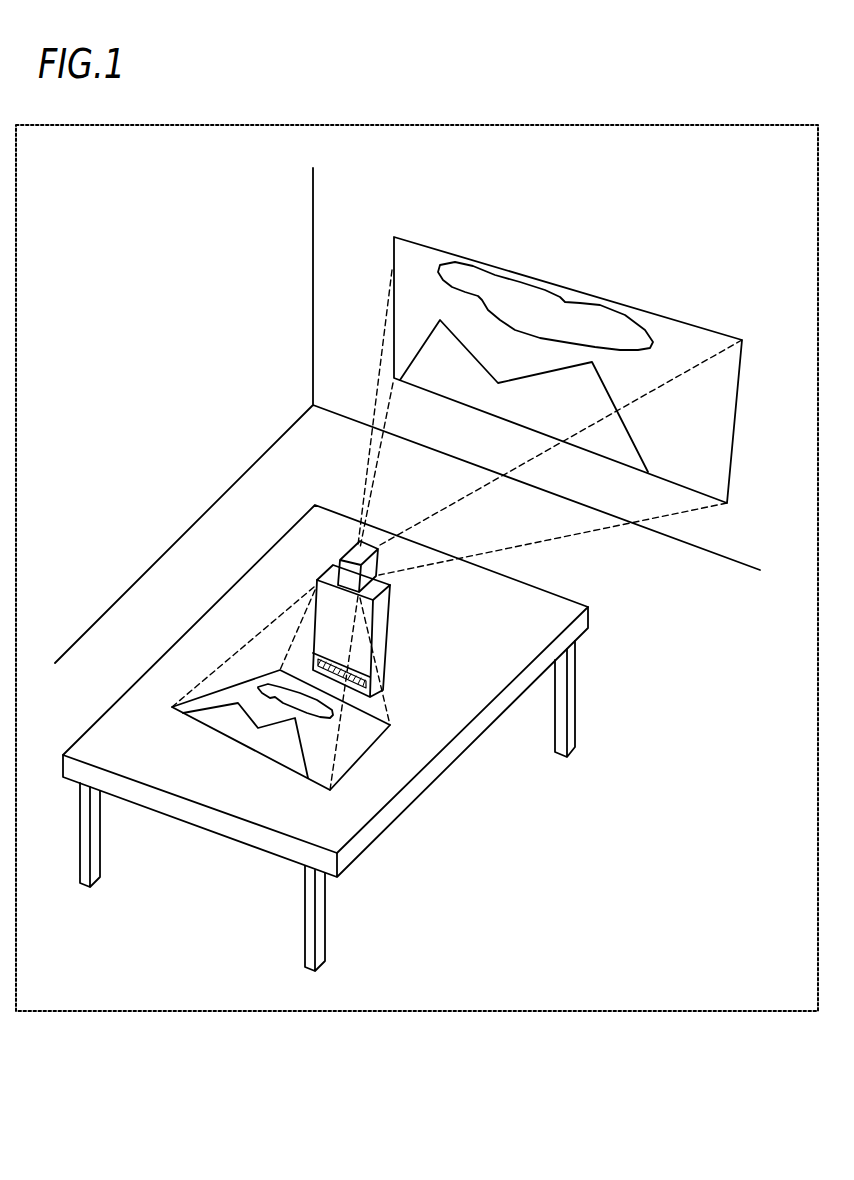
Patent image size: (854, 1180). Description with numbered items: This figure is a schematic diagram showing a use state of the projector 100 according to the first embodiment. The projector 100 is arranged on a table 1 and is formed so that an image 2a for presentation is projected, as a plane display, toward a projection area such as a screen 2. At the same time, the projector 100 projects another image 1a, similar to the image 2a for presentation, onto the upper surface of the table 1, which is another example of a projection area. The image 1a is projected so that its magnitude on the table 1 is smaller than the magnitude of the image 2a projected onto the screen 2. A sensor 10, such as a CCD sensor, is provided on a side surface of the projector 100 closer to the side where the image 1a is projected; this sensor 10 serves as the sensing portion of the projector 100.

The table 1 is at (562, 600).
The image 1a is at (377, 743).
The screen 2 is at (362, 236).
The image for presentation 2a is at (690, 322).
The sensor 10 is at (383, 692).
The projector 100 is at (457, 530).